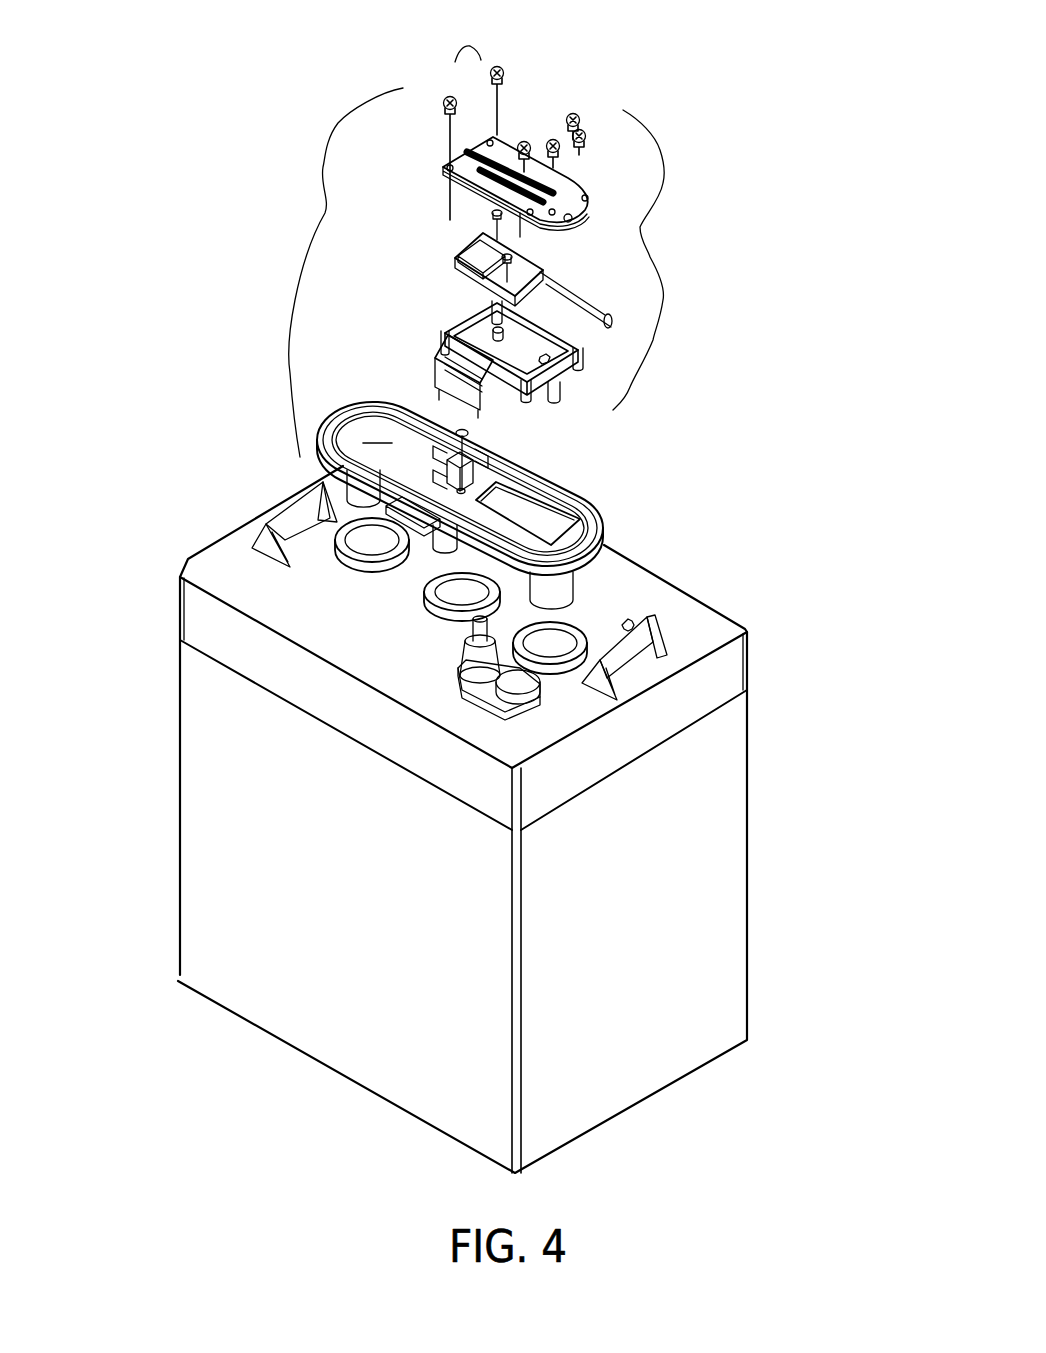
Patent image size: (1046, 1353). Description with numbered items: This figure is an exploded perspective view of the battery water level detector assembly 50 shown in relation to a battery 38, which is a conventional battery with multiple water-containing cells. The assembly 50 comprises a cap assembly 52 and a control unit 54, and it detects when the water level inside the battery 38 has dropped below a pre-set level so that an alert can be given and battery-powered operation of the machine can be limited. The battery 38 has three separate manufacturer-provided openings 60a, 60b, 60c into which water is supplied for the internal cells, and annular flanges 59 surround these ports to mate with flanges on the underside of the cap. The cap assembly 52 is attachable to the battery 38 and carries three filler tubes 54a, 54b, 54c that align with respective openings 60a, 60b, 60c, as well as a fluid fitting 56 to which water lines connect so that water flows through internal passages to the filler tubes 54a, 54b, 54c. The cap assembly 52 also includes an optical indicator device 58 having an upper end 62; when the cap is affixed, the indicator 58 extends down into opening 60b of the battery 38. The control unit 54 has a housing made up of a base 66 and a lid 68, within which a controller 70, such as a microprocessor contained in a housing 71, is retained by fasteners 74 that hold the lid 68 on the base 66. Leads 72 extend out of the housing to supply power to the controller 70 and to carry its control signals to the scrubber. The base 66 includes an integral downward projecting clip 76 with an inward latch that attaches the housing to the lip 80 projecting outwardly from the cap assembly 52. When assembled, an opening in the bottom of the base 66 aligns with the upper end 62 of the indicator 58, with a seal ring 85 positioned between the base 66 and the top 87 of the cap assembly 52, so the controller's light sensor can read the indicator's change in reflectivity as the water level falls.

The battery 38 is at (215, 797).
The battery water level detector assembly 50 is at (318, 213).
The cap assembly 52 is at (598, 511).
The control unit 54 is at (643, 230).
The filler tube 54a is at (350, 490).
The filler tube 54b is at (441, 554).
The filler tube 54c is at (558, 587).
The fluid fitting 56 is at (406, 410).
The optical indicator device 58 is at (507, 489).
The annular flange 59 is at (366, 537).
The opening 60a is at (320, 548).
The opening 60b is at (458, 622).
The opening 60c is at (568, 628).
The upper end 62 is at (487, 467).
The base 66 is at (481, 351).
The lid 68 is at (452, 180).
The controller 70 is at (502, 269).
The housing 71 is at (470, 260).
The leads 72 is at (580, 302).
The fasteners 74 is at (452, 96).
The clip 76 is at (433, 362).
The lip 80 is at (307, 417).
The seal ring 85 is at (470, 432).
The top 87 is at (377, 429).